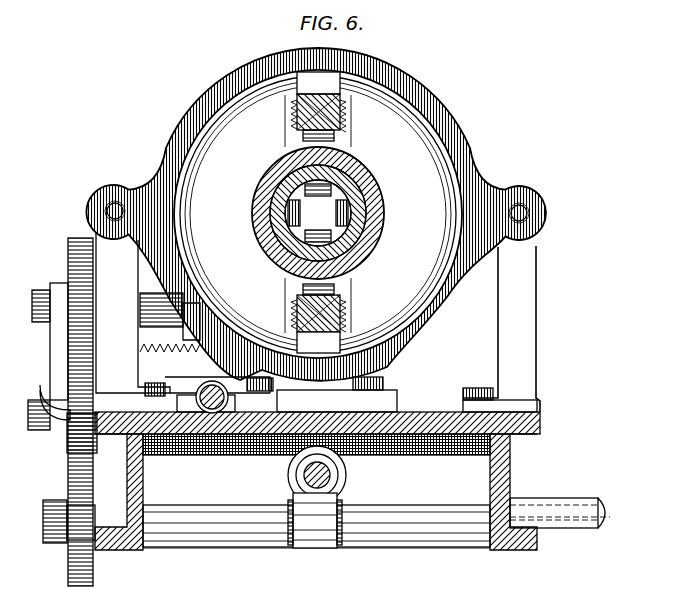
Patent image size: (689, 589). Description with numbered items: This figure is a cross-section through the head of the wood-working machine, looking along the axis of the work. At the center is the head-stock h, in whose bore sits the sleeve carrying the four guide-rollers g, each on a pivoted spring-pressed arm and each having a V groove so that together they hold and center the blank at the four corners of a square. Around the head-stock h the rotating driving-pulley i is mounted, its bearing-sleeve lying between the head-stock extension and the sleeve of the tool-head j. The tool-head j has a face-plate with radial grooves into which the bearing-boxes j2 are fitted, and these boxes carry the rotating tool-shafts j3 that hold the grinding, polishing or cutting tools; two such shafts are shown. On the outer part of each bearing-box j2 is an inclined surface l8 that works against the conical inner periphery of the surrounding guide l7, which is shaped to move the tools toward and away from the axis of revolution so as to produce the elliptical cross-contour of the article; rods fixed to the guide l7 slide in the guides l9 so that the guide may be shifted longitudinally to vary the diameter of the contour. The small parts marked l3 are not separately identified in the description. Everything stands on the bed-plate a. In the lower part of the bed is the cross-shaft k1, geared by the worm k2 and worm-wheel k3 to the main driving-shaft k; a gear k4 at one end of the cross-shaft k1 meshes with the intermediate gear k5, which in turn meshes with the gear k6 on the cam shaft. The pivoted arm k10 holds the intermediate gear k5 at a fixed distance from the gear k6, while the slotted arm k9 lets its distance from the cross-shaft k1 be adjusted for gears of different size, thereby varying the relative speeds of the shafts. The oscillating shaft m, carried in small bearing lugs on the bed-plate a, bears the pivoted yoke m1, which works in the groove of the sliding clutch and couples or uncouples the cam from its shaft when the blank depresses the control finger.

The guide l7 is at (445, 124).
The inclined surface l8 is at (350, 80).
The guides l9 is at (318, 322).
The bearing-boxes j2 is at (297, 106).
The tool-shafts j3 is at (347, 115).
The pole tip shim l3 is at (303, 136).
The tool-head j is at (380, 172).
The driving-pulley i is at (379, 200).
The head-stock h is at (366, 226).
The guide-rollers g is at (330, 213).
The bed-plate a is at (510, 470).
The pivoted yoke m1 is at (215, 375).
The shaft m is at (222, 388).
The gear k6 is at (68, 262).
The pivoted arm k10 is at (50, 338).
The intermediate gear k5 is at (50, 380).
The slotted arm k9 is at (70, 440).
The gear k4 is at (60, 545).
The cross-shaft k1 is at (420, 503).
The worm k2 is at (288, 478).
The main driving-shaft k is at (330, 475).
The worm-wheel k3 is at (315, 548).